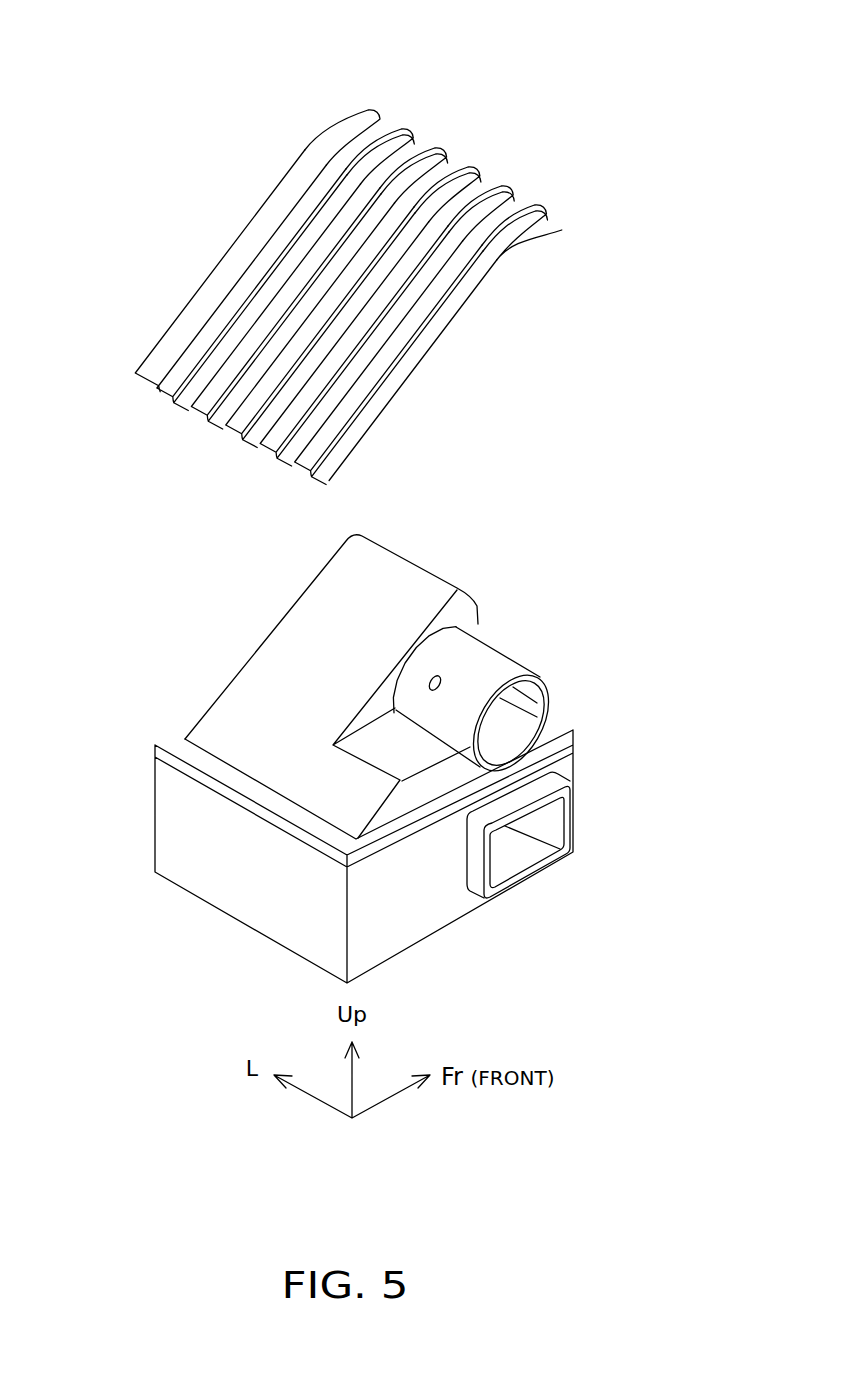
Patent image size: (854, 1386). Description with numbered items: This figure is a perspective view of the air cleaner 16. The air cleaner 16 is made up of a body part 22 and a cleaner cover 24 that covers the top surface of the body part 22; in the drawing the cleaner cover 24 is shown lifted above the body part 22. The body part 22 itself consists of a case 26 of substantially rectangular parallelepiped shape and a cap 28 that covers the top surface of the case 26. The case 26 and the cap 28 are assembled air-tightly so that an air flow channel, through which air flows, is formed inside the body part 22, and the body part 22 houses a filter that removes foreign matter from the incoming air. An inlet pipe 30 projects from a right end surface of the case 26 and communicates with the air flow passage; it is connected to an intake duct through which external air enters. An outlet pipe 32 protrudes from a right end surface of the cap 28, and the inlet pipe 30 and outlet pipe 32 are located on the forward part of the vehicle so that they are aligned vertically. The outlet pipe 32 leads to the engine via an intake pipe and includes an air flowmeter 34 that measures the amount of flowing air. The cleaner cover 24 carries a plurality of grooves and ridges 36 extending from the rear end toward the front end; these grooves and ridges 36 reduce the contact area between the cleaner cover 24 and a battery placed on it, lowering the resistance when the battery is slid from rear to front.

The air cleaner 16 is at (315, 249).
The cleaner cover 24 is at (315, 249).
The grooves and ridges 36 is at (400, 119).
The body part 22 is at (407, 711).
The case 26 is at (247, 892).
The cap 28 is at (390, 582).
The inlet pipe 30 is at (545, 822).
The outlet pipe 32 is at (376, 671).
The air flowmeter 34 is at (428, 680).